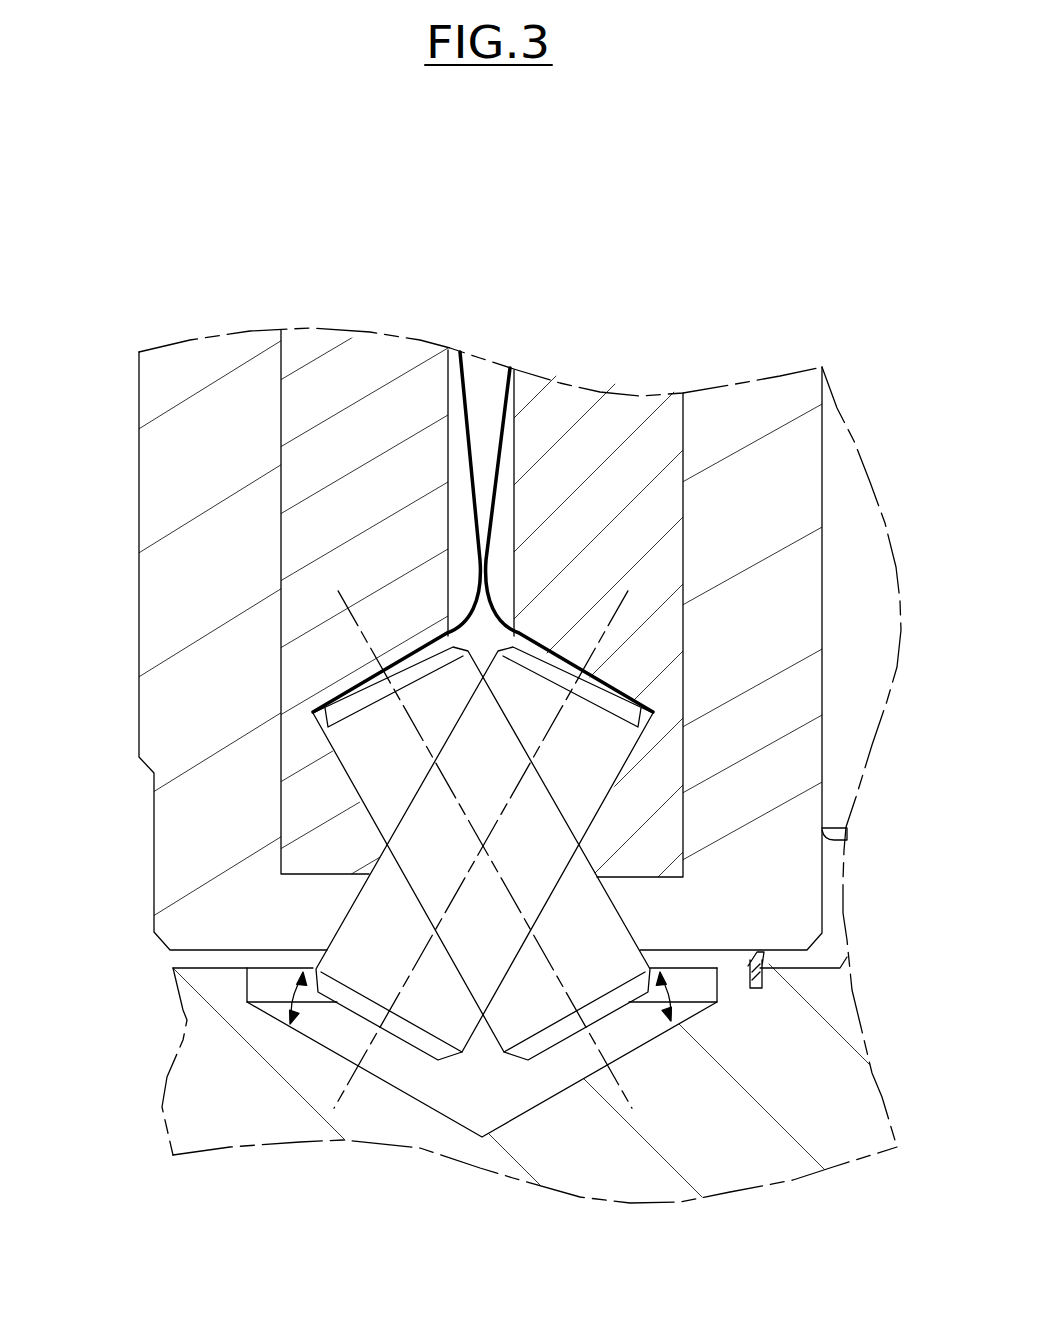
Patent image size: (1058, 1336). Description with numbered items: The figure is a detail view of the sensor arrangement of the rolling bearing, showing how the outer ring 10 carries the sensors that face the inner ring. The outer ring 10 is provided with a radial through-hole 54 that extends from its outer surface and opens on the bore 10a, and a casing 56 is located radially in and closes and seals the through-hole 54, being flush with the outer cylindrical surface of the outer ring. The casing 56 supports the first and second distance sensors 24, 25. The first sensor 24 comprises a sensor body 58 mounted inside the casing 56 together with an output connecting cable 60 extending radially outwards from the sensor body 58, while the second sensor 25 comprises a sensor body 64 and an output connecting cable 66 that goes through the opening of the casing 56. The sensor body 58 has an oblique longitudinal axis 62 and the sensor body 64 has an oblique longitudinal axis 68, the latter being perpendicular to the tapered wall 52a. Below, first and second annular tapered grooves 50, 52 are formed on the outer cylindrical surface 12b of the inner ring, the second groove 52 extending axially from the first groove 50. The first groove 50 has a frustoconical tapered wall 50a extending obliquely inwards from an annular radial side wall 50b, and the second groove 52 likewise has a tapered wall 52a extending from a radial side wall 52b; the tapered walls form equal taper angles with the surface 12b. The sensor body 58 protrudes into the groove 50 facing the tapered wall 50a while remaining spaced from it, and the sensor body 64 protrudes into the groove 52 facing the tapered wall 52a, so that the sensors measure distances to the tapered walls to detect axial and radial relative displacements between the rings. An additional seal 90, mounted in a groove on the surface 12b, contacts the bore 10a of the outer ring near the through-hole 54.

The outer ring 10 is at (198, 352).
The bore 10a is at (207, 953).
The outer cylindrical surface 12b is at (223, 963).
The first distance sensor 24 is at (613, 777).
The second distance sensor 25 is at (360, 769).
The first annular tapered groove 50 is at (396, 1077).
The tapered wall 50a is at (460, 1099).
The radial side wall 50b is at (255, 988).
The second annular tapered groove 52 is at (569, 1078).
The tapered wall 52a is at (492, 1103).
The radial side wall 52b is at (713, 987).
The radial through-hole 54 is at (282, 403).
The casing 56 is at (608, 427).
The sensor body 58 is at (603, 745).
The output connecting cable 60 is at (503, 413).
The longitudinal axis 62 is at (618, 610).
The sensor body 64 is at (368, 743).
The output connecting cable 66 is at (465, 387).
The longitudinal axis 68 is at (347, 610).
The additional seal 90 is at (763, 953).